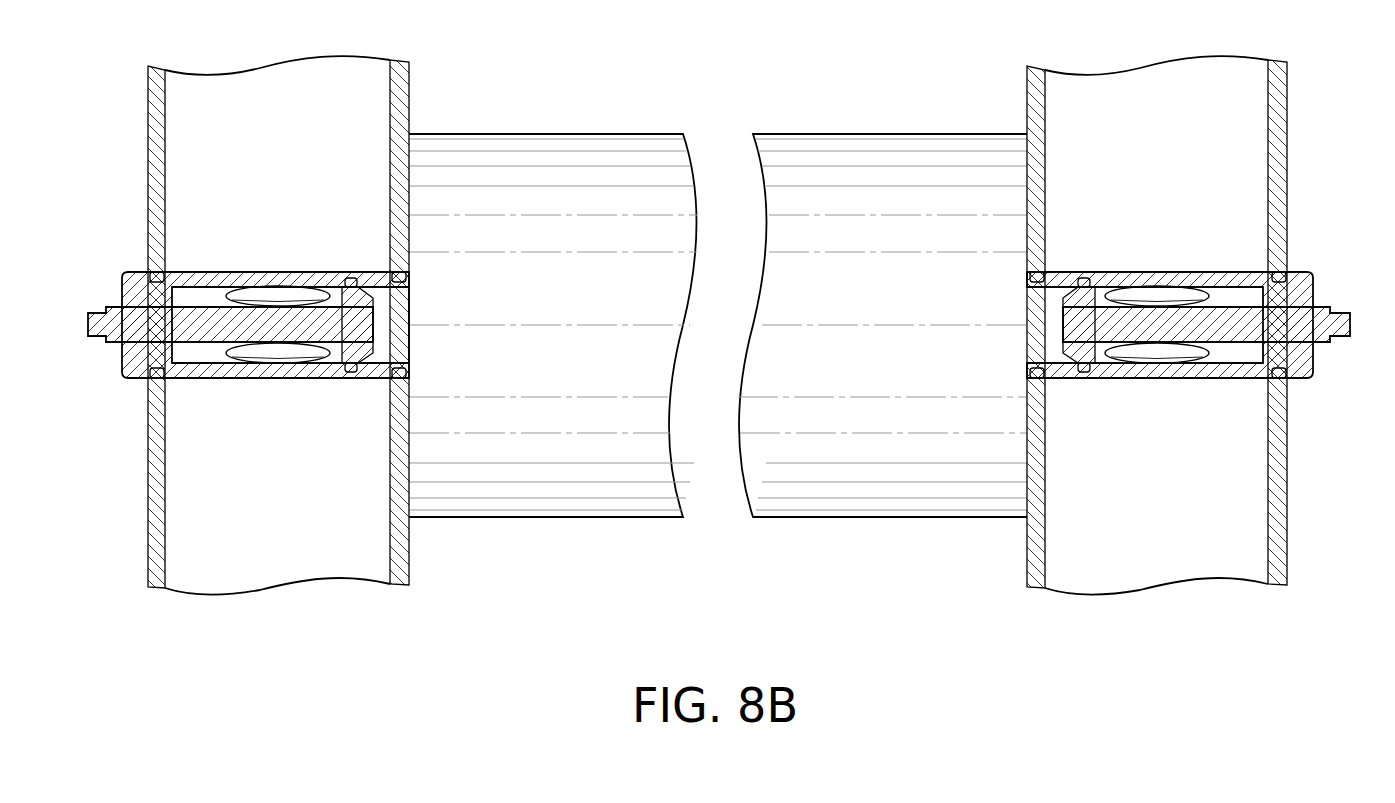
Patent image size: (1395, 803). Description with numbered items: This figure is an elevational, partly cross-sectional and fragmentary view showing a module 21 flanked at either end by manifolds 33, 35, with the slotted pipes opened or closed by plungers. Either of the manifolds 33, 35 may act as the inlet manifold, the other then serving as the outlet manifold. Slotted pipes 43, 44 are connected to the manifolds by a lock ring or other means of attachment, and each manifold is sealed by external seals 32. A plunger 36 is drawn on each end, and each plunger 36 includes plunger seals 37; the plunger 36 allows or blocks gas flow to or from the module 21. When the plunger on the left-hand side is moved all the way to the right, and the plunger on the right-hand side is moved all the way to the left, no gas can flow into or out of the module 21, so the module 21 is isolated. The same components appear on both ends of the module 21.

The module 21 is at (567, 158).
The external seals 32 is at (158, 268).
The manifold 33 is at (148, 503).
The manifold 35 is at (1287, 505).
The plunger 36 is at (113, 307).
The plunger seals 37 is at (352, 372).
The slotted pipe 43 is at (260, 282).
The slotted pipe 44 is at (1162, 277).